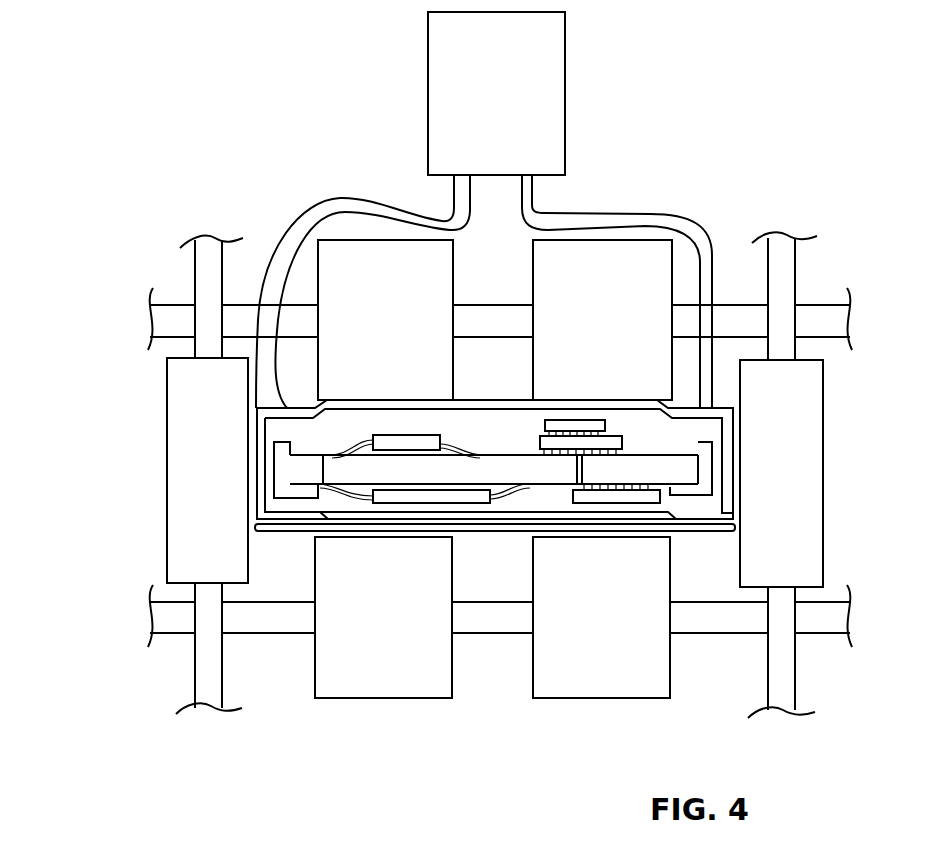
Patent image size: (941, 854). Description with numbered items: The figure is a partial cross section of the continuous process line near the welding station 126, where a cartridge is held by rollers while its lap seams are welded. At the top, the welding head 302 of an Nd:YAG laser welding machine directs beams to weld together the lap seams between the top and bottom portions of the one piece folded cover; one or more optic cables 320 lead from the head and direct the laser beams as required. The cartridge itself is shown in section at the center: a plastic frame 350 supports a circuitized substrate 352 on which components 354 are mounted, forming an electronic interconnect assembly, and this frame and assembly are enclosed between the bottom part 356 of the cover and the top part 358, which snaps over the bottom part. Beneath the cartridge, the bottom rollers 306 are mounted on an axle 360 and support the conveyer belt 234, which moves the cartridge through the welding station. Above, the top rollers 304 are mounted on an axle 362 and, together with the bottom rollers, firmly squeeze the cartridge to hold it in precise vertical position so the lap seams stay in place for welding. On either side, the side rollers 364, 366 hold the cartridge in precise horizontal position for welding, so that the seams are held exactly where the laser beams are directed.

The welding station 126 is at (172, 170).
The welding head 302 is at (532, 110).
The top rollers 304 is at (577, 268).
The bottom rollers 306 is at (612, 680).
The optic cables 320 is at (543, 207).
The conveyer belt 234 is at (252, 500).
The plastic frame 350 is at (283, 477).
The circuitized substrate 352 is at (298, 467).
The components 354 is at (530, 445).
The bottom part of the cover 356 is at (690, 400).
The top part of the cover 358 is at (491, 548).
The axle 360 is at (520, 631).
The axle 362 is at (520, 336).
The side roller 364 is at (195, 512).
The side roller 366 is at (765, 550).